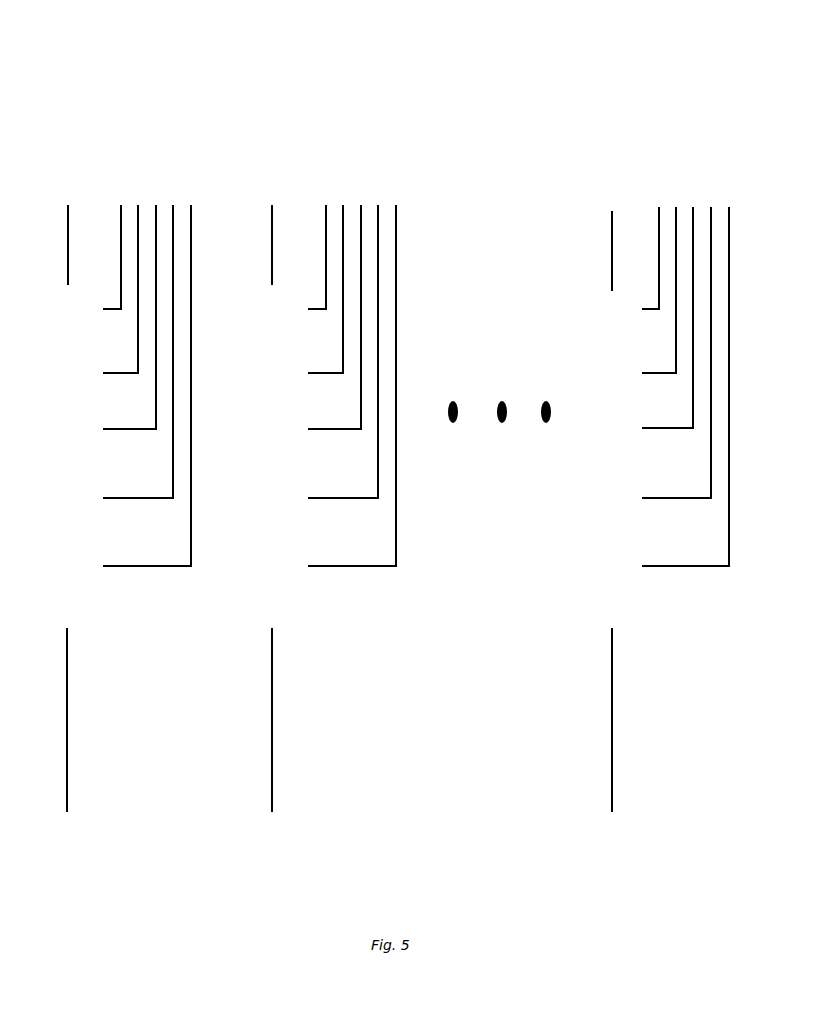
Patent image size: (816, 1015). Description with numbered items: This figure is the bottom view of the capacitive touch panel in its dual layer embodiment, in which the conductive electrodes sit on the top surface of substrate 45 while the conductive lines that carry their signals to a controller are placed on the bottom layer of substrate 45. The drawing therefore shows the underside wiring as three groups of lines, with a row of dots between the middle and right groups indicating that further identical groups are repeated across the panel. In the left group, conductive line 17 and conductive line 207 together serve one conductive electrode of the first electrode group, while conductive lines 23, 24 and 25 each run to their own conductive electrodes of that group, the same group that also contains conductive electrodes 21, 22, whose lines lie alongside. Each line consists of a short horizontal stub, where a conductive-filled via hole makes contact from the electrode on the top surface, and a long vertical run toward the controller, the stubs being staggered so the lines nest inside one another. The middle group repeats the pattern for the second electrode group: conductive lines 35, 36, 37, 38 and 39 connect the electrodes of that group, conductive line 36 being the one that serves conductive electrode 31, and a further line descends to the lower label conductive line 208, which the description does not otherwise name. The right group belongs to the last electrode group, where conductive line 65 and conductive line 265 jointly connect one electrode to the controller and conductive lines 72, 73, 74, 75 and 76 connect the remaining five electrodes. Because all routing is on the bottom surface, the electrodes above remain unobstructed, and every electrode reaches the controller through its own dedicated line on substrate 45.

The substrate 45 is at (338, 123).
The conductive line 17 is at (67, 236).
The conductive electrode 21 is at (116, 248).
The conductive electrode 22 is at (124, 280).
The conductive line 23 is at (133, 308).
The conductive line 24 is at (142, 343).
The conductive line 25 is at (151, 377).
The conductive electrode 31 is at (271, 236).
The conductive line 35 is at (321, 248).
The conductive line 36 is at (329, 280).
The conductive line 37 is at (338, 308).
The conductive line 38 is at (347, 343).
The conductive line 39 is at (356, 377).
The conductive line 65 is at (611, 241).
The conductive line 72 is at (654, 248).
The conductive line 73 is at (663, 280).
The conductive line 74 is at (671, 310).
The conductive line 75 is at (680, 345).
The conductive line 76 is at (689, 379).
The conductive line 207 is at (61, 738).
The second output lead 208 is at (272, 738).
The conductive line 265 is at (611, 738).